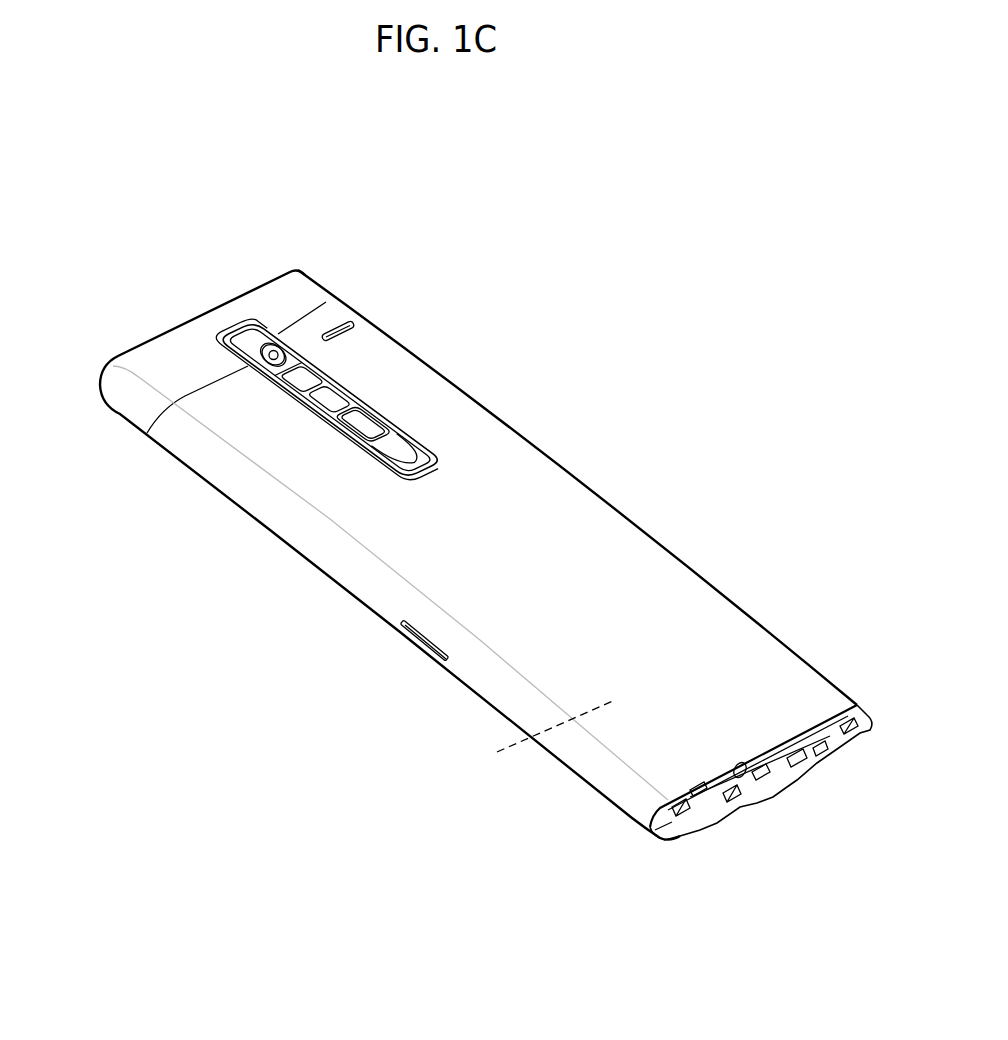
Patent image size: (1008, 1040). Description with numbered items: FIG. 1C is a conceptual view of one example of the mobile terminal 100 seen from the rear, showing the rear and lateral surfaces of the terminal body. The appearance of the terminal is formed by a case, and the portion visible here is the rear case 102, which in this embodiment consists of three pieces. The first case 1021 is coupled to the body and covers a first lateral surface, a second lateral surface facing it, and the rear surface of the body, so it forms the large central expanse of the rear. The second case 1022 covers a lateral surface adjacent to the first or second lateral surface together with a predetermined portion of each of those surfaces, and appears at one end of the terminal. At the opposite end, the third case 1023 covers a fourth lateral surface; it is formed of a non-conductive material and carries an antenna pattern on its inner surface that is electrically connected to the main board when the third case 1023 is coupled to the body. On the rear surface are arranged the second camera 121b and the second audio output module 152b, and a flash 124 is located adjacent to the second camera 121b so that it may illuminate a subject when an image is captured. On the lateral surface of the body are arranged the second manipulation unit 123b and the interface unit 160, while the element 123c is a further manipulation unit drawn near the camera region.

The mobile terminal 100 is at (94, 181).
The rear case 102 is at (72, 458).
The first case 1021 is at (341, 555).
The second case 1022 is at (120, 407).
The third case 1023 is at (648, 830).
The second camera 121b is at (262, 345).
The second audio output module 152b is at (340, 330).
The flash 124 is at (312, 378).
The manipulation unit (power key) 123c is at (373, 428).
The second manipulation unit 123b is at (438, 647).
The interface unit 160 is at (786, 786).